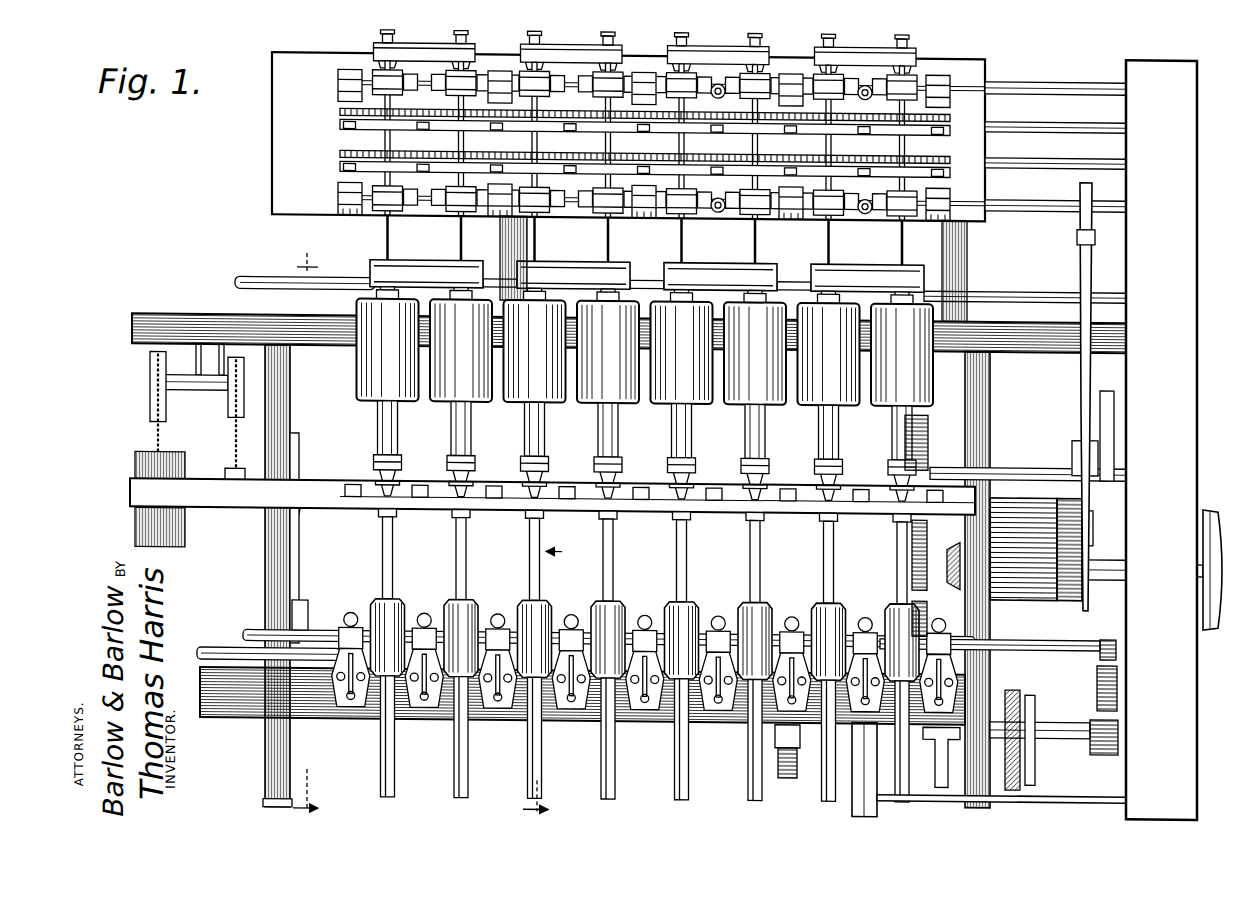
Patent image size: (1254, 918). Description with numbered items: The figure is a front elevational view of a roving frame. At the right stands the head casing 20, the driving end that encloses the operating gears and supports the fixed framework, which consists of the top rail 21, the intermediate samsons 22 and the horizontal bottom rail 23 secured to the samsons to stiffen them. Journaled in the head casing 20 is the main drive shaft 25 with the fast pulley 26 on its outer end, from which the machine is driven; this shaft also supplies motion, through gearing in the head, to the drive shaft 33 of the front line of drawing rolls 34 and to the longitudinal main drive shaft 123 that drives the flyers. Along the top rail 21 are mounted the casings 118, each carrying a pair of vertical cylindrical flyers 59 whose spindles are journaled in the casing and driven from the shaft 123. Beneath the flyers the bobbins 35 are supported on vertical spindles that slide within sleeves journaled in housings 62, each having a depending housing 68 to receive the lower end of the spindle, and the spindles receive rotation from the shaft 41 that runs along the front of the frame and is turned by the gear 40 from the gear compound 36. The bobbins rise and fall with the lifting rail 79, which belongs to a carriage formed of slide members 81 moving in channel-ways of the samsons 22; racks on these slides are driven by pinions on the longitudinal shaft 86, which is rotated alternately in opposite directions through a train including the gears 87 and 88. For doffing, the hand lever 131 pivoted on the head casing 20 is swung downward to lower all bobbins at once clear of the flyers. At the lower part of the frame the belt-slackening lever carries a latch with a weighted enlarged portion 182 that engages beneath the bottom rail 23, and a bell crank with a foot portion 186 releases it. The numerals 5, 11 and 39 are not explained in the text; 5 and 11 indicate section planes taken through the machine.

The head casing 20 is at (1145, 66).
The hand lever 131 is at (1088, 165).
The drive shaft 33 is at (1005, 200).
The main drive shaft 123 is at (1015, 282).
The drawing rolls 34 is at (900, 204).
The casing 118 is at (412, 264).
The section line 5- 5 is at (305, 535).
The top rail 21 is at (166, 310).
The cylindrical flyer 59 is at (357, 362).
The bobbin 35 is at (453, 428).
The slide member 81 is at (882, 469).
The samson 22 is at (288, 437).
The gear compound 36 is at (1040, 500).
The pinion 39 is at (1058, 542).
The main drive shaft 25 is at (1105, 537).
The fast pulley 26 is at (1218, 608).
The lifting rail 79 is at (238, 498).
The section line 11- 11 is at (552, 691).
The housing 62 is at (400, 602).
The shaft 41 is at (322, 627).
The shaft 86 is at (212, 645).
The bottom rail 23 is at (237, 711).
The housing 68 is at (614, 761).
The enlarged portion 182 is at (777, 734).
The foot portion 186 is at (792, 762).
The gear 40 is at (1074, 659).
The gear 87 is at (1118, 634).
The gear 88 is at (1120, 721).